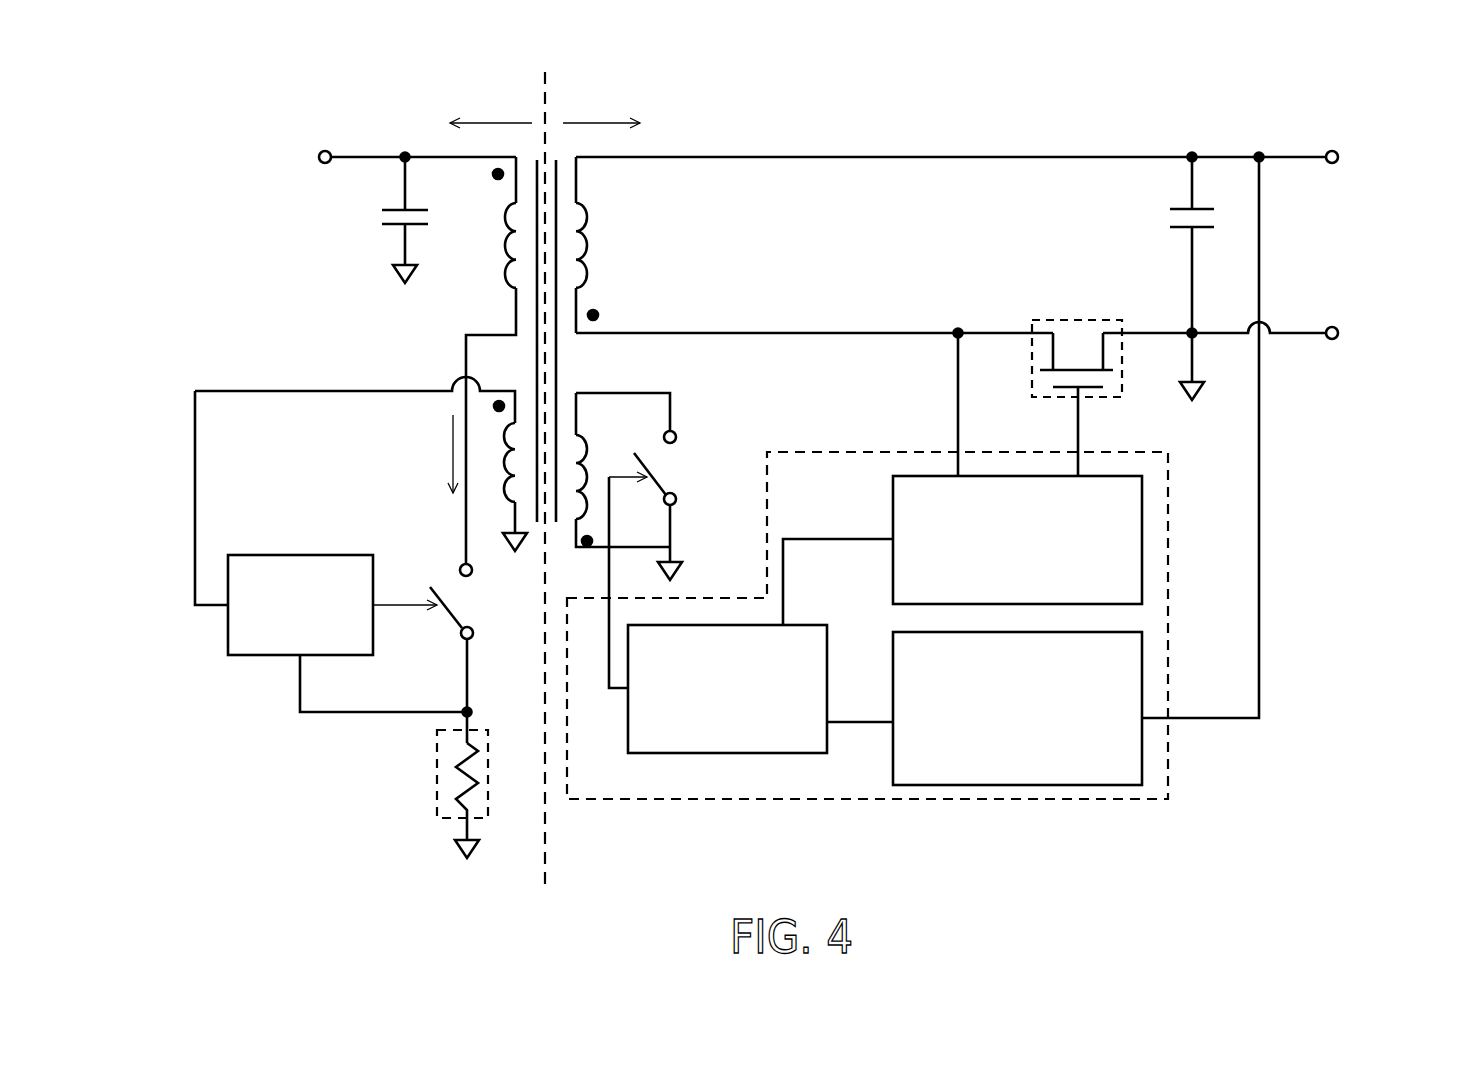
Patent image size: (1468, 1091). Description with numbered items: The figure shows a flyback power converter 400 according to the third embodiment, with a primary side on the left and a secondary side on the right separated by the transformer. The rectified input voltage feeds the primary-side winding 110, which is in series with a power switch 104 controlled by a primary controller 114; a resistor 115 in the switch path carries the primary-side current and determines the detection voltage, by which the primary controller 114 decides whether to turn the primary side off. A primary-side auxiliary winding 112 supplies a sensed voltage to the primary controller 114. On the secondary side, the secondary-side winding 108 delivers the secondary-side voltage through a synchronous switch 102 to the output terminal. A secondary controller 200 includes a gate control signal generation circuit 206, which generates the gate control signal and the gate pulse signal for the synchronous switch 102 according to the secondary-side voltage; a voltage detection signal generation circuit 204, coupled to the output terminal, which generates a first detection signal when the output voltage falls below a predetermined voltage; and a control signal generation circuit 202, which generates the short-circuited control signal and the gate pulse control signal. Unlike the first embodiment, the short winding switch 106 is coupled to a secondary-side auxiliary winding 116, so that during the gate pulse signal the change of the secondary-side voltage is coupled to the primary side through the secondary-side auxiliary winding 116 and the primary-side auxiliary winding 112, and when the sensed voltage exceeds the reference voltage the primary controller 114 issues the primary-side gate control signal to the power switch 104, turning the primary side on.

The power converter 400 is at (247, 130).
The synchronous switch 102 is at (1078, 318).
The power switch 104 is at (460, 605).
The short winding switch 106 is at (662, 465).
The secondary-side winding 108 is at (592, 223).
The primary-side winding 110 is at (505, 263).
The primary-side auxiliary winding 112 is at (508, 478).
The primary controller 114 is at (303, 553).
The resistor 115 is at (437, 765).
The secondary-side auxiliary winding 116 is at (590, 460).
The secondary controller 200 is at (909, 673).
The control signal generation circuit 202 is at (726, 754).
The voltage detection signal generation circuit 204 is at (1018, 786).
The gate control signal generation circuit 206 is at (1145, 540).